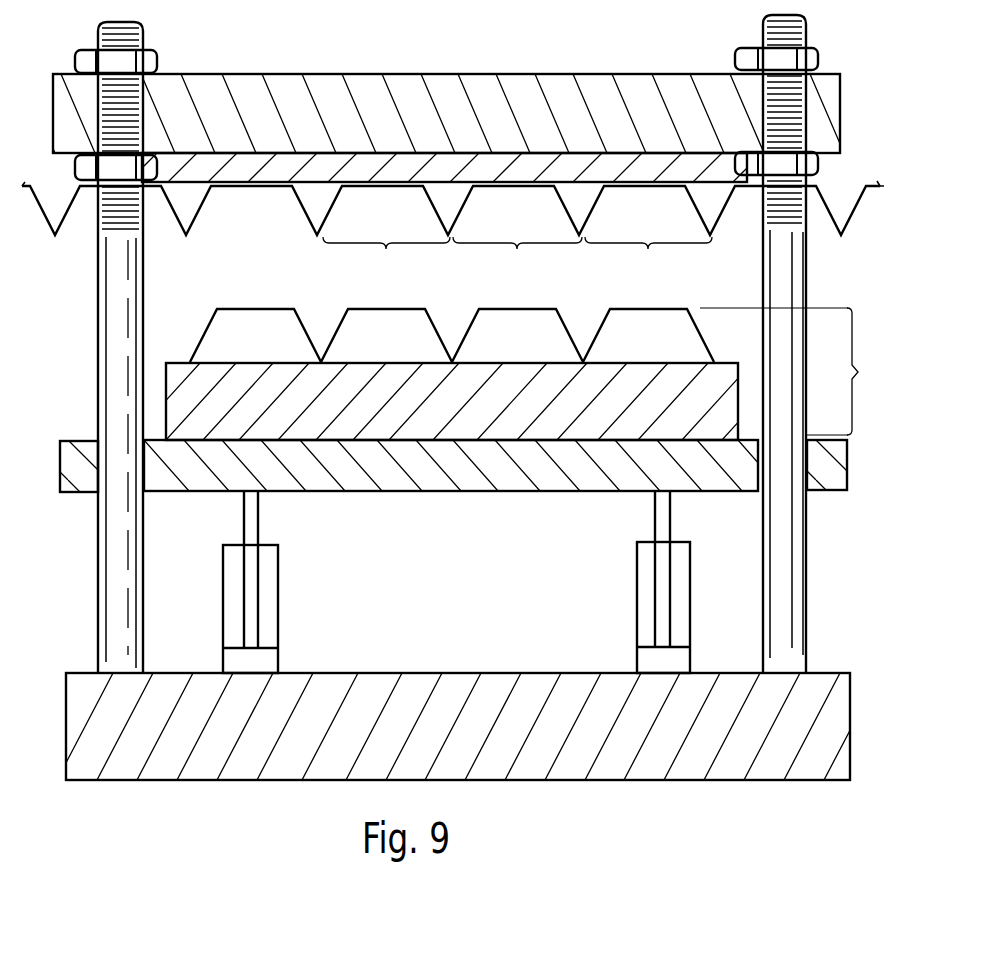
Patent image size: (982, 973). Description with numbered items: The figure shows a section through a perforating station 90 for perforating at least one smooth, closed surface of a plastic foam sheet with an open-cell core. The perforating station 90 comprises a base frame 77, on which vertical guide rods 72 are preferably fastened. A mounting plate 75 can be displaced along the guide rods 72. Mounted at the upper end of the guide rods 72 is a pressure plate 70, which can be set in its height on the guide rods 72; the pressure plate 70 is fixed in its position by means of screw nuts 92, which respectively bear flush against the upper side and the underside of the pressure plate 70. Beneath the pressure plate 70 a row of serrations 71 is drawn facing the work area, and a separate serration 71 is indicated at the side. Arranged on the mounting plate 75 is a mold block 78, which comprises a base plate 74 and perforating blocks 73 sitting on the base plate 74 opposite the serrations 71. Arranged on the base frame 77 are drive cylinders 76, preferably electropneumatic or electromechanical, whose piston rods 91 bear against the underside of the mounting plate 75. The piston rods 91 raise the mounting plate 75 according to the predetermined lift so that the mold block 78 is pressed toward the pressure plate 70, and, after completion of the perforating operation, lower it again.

The pressure plate 70 is at (822, 121).
The serrated cutting teeth 71 is at (876, 190).
The guide rods 72 is at (780, 291).
The perforating blocks 73 is at (662, 322).
The base plate 74 is at (444, 405).
The mounting plate 75 is at (538, 460).
The drive cylinders 76 is at (648, 592).
The base frame 77 is at (717, 738).
The mold block 78 is at (794, 371).
The perforating station 90 is at (90, 376).
The piston rods 91 is at (662, 518).
The screw nuts 92 is at (148, 164).